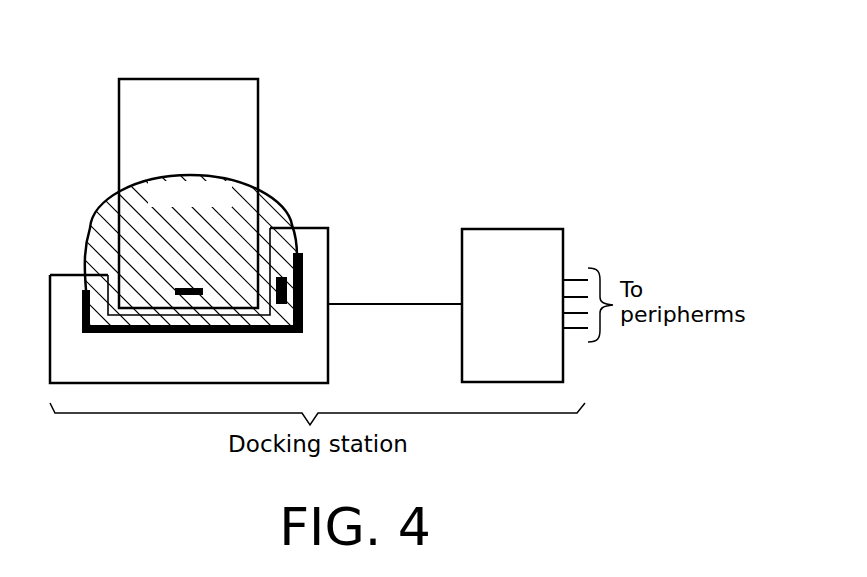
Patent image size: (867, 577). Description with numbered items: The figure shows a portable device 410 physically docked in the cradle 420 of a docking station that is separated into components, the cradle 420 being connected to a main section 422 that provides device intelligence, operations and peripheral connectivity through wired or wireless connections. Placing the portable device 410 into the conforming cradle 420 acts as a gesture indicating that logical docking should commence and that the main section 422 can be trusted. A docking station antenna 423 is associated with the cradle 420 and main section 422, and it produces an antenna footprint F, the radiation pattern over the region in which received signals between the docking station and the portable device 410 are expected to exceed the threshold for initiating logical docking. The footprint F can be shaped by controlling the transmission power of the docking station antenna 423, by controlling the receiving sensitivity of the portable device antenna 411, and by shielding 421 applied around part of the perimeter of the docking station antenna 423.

The portable device 410 is at (252, 89).
The portable device antenna 411 is at (192, 288).
The cradle 420 is at (327, 237).
The shielding 421 is at (297, 282).
The main section 422 is at (563, 237).
The docking station antenna 423 is at (287, 303).
The antenna footprint F is at (92, 213).